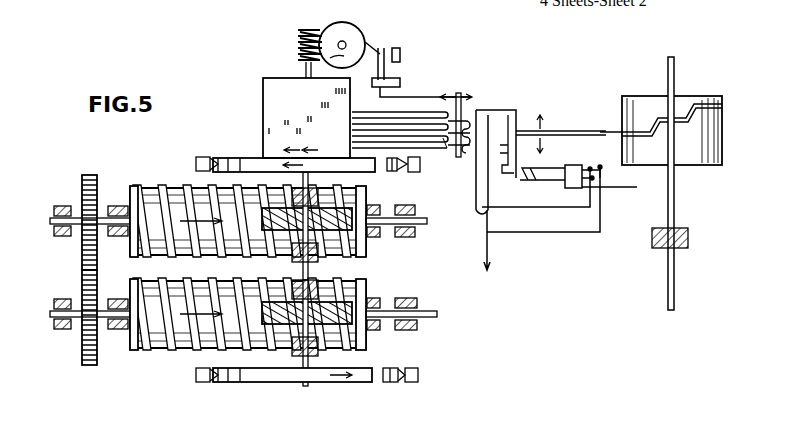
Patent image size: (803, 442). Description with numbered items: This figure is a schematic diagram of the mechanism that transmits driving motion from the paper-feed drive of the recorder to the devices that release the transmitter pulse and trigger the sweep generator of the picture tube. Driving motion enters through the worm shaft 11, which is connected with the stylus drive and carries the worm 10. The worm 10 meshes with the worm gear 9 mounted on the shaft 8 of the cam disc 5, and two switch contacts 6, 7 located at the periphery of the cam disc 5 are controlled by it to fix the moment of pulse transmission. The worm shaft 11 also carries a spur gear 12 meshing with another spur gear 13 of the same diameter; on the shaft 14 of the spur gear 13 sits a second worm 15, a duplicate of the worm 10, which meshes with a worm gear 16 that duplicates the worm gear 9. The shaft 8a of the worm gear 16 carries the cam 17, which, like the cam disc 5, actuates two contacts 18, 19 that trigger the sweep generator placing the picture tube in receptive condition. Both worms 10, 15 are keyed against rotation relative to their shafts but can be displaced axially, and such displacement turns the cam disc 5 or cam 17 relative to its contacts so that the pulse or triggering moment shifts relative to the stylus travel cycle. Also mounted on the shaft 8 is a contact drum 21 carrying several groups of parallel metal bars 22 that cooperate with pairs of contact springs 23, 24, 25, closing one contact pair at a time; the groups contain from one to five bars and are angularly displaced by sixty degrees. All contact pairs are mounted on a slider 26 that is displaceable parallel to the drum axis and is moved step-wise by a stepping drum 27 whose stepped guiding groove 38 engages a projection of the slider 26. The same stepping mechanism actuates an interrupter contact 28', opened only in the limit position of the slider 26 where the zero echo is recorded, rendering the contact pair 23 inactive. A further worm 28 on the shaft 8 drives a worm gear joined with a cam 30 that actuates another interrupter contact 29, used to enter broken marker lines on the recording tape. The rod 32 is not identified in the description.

The cam disc 5 is at (228, 158).
The switch contact 6 is at (412, 172).
The switch contact 7 is at (203, 157).
The shaft 8 is at (306, 175).
The shaft 8a is at (305, 386).
The worm gear 9 is at (344, 214).
The worm 10 is at (138, 188).
The worm shaft 11 is at (54, 218).
The spur gear 12 is at (88, 175).
The spur gear 13 is at (82, 290).
The shaft 14 is at (50, 318).
The worm 15 is at (144, 356).
The worm gear 16 is at (340, 310).
The cam 17 is at (366, 384).
The contact 18 is at (203, 384).
The contact 19 is at (394, 382).
The contact drum 21 is at (276, 78).
The metal bars 22 is at (290, 122).
The contact spring pair 23 is at (370, 112).
The contact spring pair 24 is at (408, 123).
The contact spring pair 25 is at (436, 146).
The slider 26 is at (460, 94).
The stepping drum 27 is at (708, 166).
The worm 28 is at (292, 54).
The interrupter contact 28' is at (596, 194).
The interrupter contact 29 is at (388, 52).
The cam 30 is at (350, 37).
The piston rod 32 is at (674, 207).
The stepped guiding groove 38 is at (662, 106).